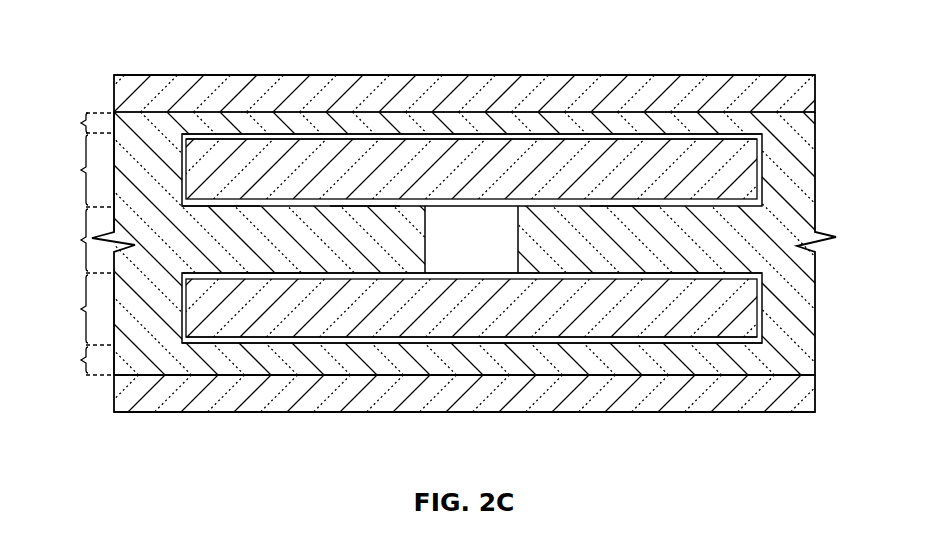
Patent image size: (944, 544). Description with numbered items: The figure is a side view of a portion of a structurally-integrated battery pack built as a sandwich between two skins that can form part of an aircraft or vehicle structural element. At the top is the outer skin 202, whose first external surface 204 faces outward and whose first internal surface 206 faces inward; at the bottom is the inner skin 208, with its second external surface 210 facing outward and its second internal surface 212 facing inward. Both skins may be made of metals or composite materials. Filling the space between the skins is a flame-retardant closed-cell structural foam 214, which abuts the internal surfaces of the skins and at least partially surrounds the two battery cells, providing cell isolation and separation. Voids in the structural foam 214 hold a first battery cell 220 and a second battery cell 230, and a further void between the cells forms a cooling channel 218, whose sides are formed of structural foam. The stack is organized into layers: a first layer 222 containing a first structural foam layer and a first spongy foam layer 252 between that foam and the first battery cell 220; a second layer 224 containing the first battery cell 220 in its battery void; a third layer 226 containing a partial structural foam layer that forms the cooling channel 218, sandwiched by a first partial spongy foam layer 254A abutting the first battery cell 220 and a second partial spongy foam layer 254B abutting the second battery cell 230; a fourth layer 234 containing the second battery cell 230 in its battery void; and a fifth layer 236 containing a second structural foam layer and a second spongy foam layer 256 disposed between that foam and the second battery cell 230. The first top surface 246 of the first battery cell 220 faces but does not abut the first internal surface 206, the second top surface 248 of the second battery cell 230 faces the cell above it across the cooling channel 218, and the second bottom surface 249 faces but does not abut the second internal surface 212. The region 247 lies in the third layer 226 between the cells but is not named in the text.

The outer skin 202 is at (795, 91).
The first external surface 204 is at (700, 75).
The first internal surface 206 is at (445, 118).
The inner skin 208 is at (805, 400).
The second external surface 210 is at (667, 413).
The second internal surface 212 is at (795, 375).
The structural foam 214 is at (797, 277).
The cooling channel 218 is at (507, 240).
The first battery cell 220 is at (660, 165).
The first layer 222 is at (74, 125).
The second layer 224 is at (74, 170).
The third layer 226 is at (74, 240).
The second battery cell 230 is at (465, 313).
The fourth layer 234 is at (74, 309).
The fifth layer 236 is at (74, 361).
The first top surface 246 is at (322, 132).
The intermediate region 247 is at (365, 208).
The second top surface 248 is at (407, 270).
The second bottom surface 249 is at (273, 343).
The first spongy foam layer 252 is at (570, 133).
The first partial spongy foam layer 254A is at (225, 207).
The second partial spongy foam layer 254B is at (278, 273).
The second spongy foam layer 256 is at (568, 343).